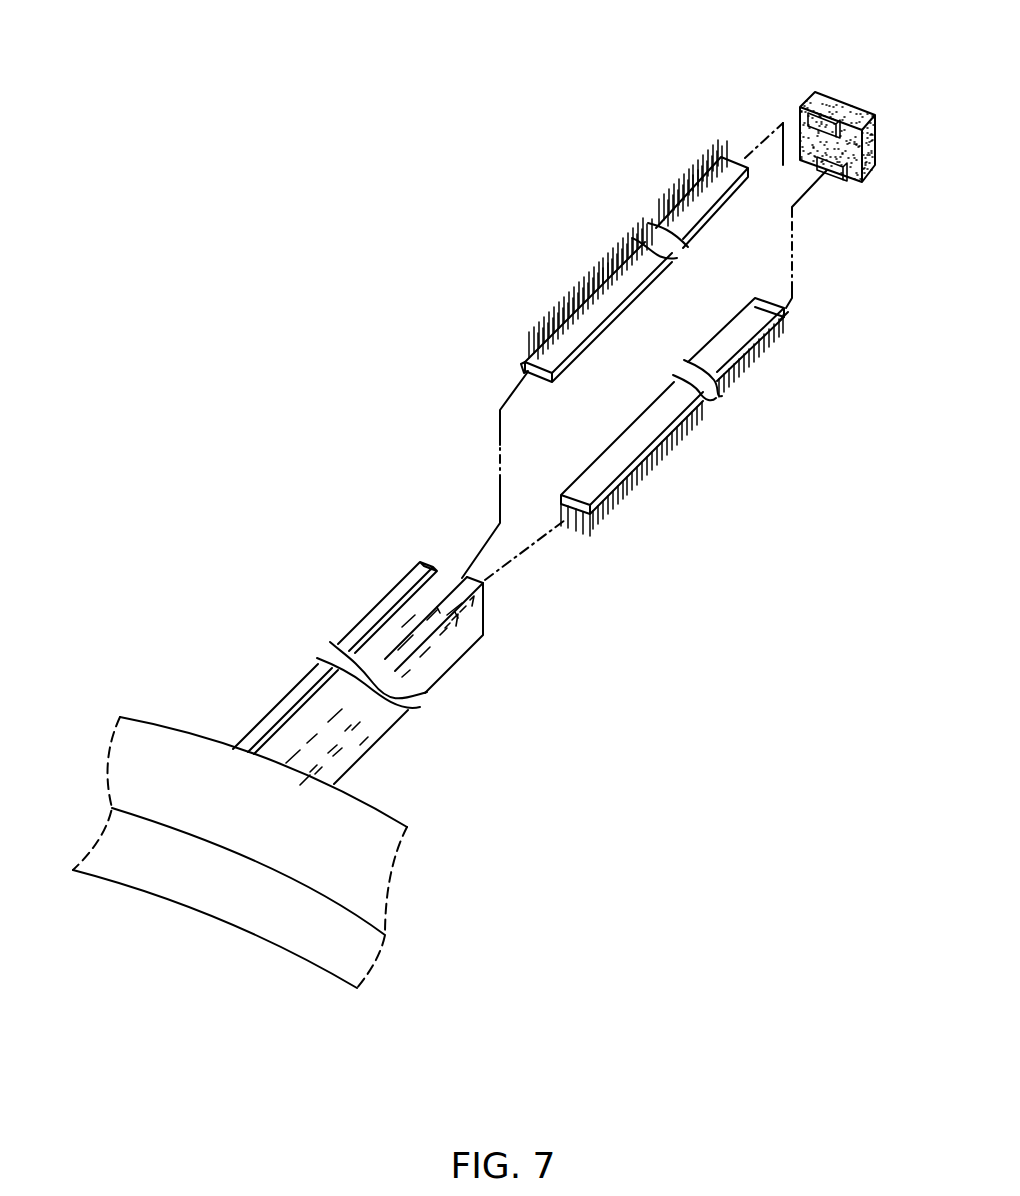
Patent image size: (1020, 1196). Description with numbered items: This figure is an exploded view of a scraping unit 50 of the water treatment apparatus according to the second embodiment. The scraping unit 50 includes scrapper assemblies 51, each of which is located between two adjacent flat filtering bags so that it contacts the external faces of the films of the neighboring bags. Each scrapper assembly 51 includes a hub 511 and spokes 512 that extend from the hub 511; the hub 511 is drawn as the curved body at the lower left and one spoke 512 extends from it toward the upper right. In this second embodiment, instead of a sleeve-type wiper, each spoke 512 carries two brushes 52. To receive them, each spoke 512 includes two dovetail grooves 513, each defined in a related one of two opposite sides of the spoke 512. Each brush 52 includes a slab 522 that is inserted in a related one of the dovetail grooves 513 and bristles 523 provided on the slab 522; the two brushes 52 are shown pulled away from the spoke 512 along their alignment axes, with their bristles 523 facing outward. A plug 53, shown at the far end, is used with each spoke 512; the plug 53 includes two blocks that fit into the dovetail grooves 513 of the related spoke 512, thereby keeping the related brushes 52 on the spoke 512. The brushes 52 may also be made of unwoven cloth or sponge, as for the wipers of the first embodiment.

The scraping unit 50 is at (473, 582).
The scrapper assembly 51 is at (298, 822).
The hub 511 is at (247, 911).
The spoke 512 is at (480, 616).
The dovetail groove 513 is at (390, 633).
The brush 52 is at (640, 338).
The slab 522 is at (523, 370).
The bristles 523 is at (545, 323).
The plug 53 is at (789, 103).